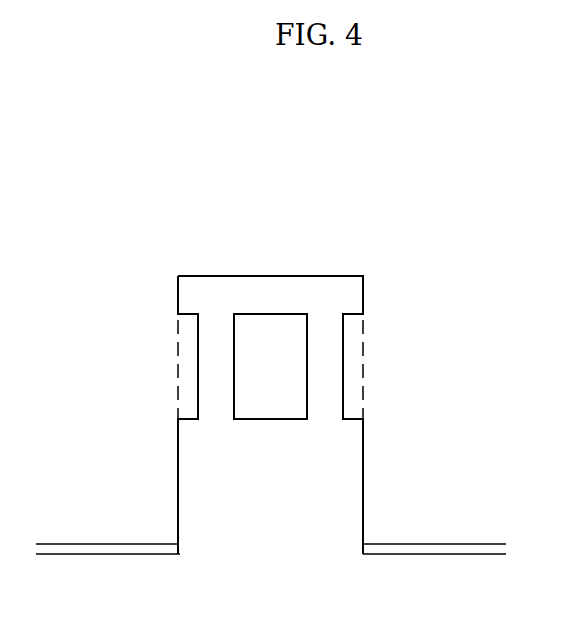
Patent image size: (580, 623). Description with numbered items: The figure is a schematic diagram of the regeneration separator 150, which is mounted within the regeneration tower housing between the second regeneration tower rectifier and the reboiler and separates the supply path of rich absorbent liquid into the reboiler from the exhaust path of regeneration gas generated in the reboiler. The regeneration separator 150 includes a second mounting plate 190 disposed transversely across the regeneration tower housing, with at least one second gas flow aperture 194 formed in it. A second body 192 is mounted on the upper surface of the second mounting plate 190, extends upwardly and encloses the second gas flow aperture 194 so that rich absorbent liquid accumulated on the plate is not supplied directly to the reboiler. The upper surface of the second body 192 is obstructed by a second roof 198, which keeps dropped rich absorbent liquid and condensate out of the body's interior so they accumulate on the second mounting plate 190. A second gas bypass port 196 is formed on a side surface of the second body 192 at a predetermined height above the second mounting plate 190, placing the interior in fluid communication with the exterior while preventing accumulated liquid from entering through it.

The regeneration separator 150 is at (427, 395).
The second mounting plate 190 is at (107, 544).
The second body 192 is at (363, 485).
The second gas flow aperture 194 is at (263, 555).
The second gas bypass port 196 is at (271, 348).
The second roof 198 is at (322, 276).